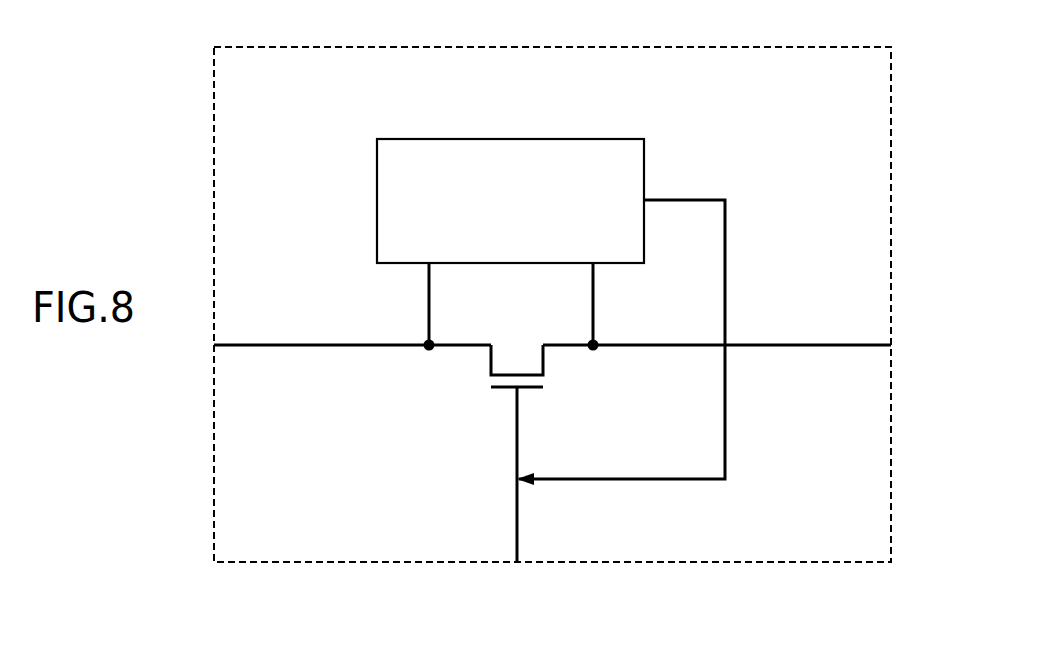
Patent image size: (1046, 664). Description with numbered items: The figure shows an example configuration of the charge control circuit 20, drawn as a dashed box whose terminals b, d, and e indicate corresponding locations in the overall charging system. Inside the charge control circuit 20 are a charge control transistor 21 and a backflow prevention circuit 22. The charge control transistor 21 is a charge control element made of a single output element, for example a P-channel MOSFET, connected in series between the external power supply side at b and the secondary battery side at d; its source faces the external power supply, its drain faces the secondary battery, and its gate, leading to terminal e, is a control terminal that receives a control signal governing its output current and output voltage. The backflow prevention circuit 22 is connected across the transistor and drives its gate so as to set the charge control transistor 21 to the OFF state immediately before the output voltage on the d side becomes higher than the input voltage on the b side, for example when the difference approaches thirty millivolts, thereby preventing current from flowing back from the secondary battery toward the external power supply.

The charge control circuit 20 is at (725, 47).
The charge control transistor 21 is at (546, 368).
The backflow prevention circuit 22 is at (553, 139).